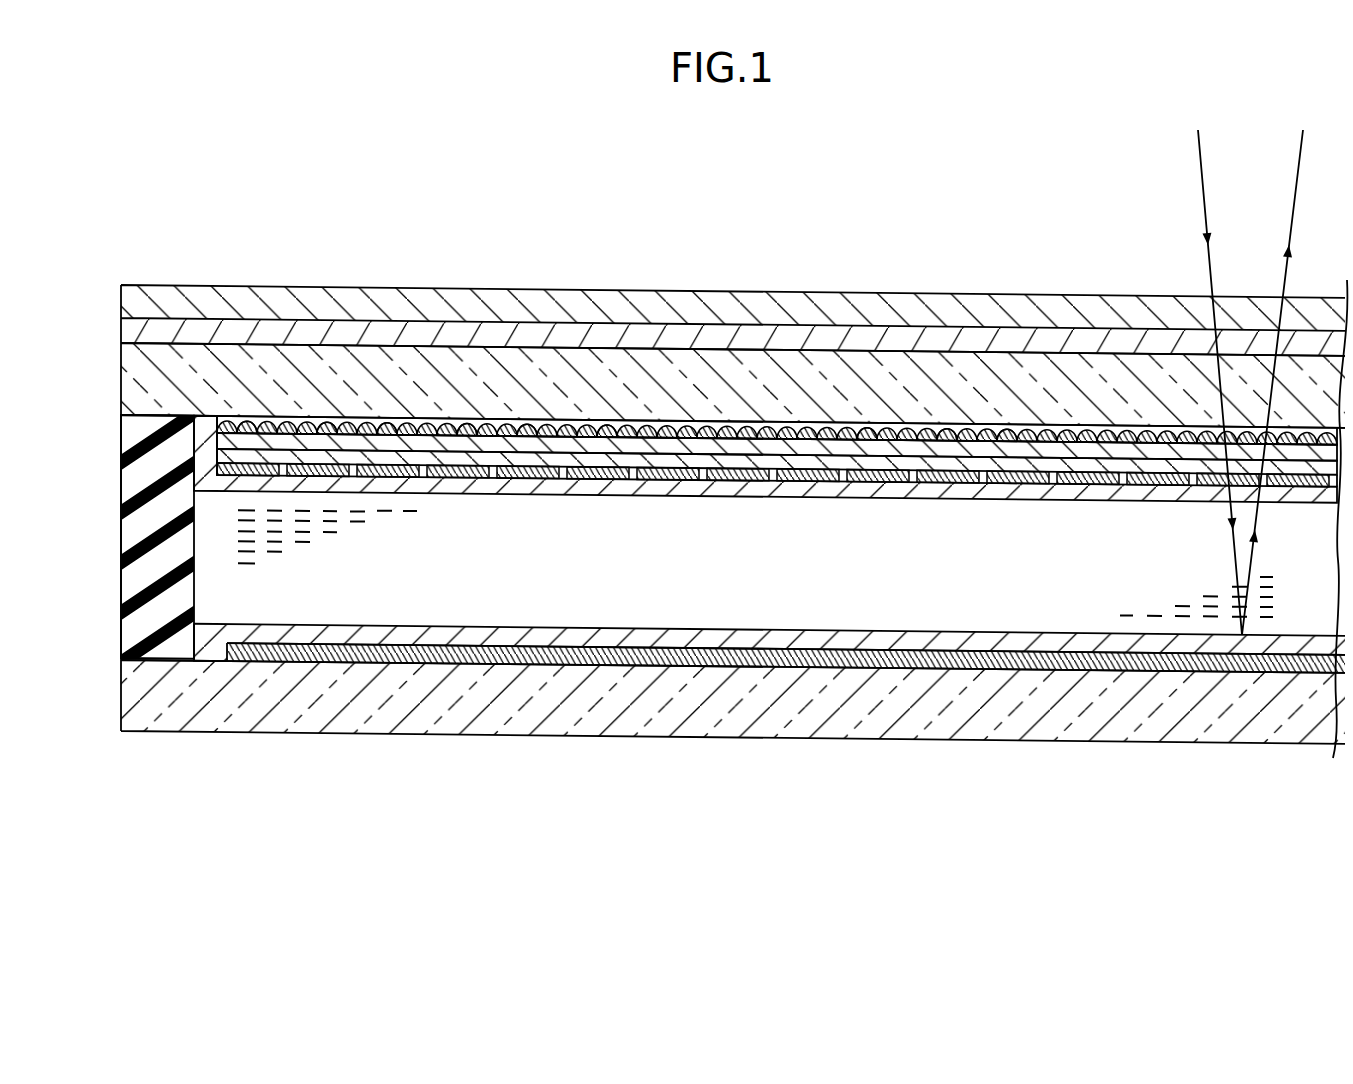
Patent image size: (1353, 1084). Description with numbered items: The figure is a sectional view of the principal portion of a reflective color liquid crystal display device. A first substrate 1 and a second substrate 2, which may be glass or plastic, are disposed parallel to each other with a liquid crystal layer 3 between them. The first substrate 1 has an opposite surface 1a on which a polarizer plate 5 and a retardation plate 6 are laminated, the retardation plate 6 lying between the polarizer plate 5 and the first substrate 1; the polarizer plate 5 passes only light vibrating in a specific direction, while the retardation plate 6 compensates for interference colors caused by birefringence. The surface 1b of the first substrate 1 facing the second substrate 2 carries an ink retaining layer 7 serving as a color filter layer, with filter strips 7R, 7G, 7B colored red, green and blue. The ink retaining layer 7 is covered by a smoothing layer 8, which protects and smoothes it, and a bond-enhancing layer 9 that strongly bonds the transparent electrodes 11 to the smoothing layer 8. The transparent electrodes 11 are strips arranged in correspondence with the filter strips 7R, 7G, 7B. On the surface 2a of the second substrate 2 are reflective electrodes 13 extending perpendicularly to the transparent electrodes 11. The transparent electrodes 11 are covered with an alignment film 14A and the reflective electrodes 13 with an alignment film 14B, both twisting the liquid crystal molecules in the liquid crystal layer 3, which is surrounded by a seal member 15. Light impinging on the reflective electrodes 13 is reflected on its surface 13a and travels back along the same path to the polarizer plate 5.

The first substrate 1 is at (690, 362).
The opposite surface 1a is at (651, 348).
The surface 1b is at (721, 427).
The second substrate 2 is at (647, 718).
The surface 2a is at (741, 665).
The liquid crystal layer 3 is at (910, 598).
The polarizer plate 5 is at (172, 287).
The retardation plate 6 is at (216, 333).
The ink retaining layer 7 is at (778, 410).
The filter strip 7R is at (250, 418).
The filter strip 7G is at (318, 418).
The filter strip 7B is at (390, 419).
The smoothing layer 8 is at (1095, 433).
The bond-enhancing layer 9 is at (1130, 465).
The transparent electrodes 11 is at (463, 493).
The reflective electrodes 13 is at (480, 666).
The surface 13a is at (560, 644).
The alignment film 14A is at (772, 497).
The alignment film 14B is at (817, 636).
The seal member 15 is at (121, 518).